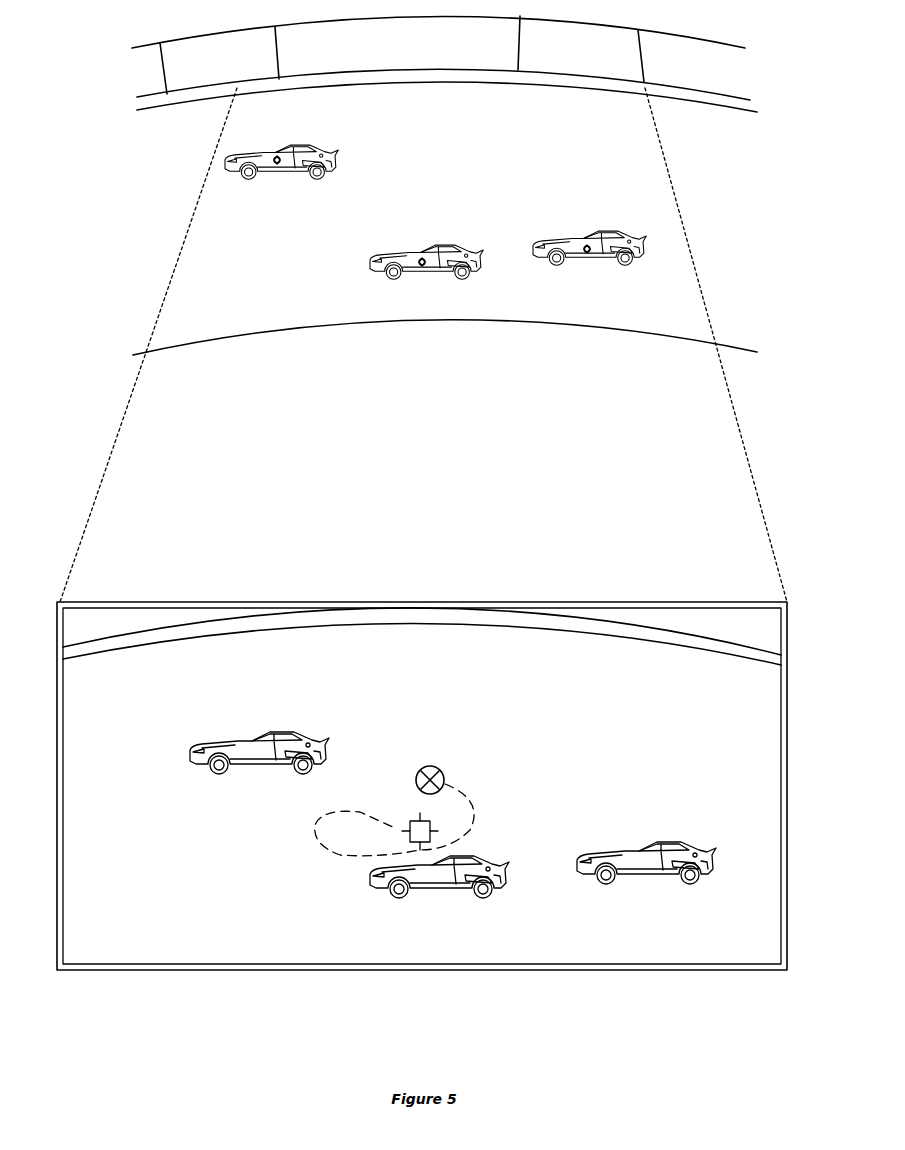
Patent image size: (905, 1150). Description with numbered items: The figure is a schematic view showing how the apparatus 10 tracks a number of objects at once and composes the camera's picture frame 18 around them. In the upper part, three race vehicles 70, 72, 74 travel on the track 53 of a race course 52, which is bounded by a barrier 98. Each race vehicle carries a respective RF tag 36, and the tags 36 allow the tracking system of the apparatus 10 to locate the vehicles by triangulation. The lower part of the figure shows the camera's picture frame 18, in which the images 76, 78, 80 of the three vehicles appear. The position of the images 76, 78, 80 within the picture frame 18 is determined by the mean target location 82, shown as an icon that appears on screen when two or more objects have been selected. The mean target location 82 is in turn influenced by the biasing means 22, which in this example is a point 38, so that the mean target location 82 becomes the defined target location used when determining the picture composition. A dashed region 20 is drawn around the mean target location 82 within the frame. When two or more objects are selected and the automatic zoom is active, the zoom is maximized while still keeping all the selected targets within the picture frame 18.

The apparatus 10 is at (129, 999).
The picture frame 18 is at (436, 602).
The region of interest 20 is at (328, 850).
The biasing means 22 is at (436, 760).
The RF tag 36 is at (276, 164).
The point 38 is at (416, 786).
The race course 52 is at (240, 340).
The track 53 is at (462, 163).
The race vehicle 70 is at (310, 151).
The race vehicle 72 is at (458, 251).
The race vehicle 74 is at (616, 238).
The image 76 is at (305, 740).
The image 78 is at (507, 887).
The image 80 is at (690, 849).
The mean target location 82 is at (442, 818).
The barrier 98 is at (465, 48).